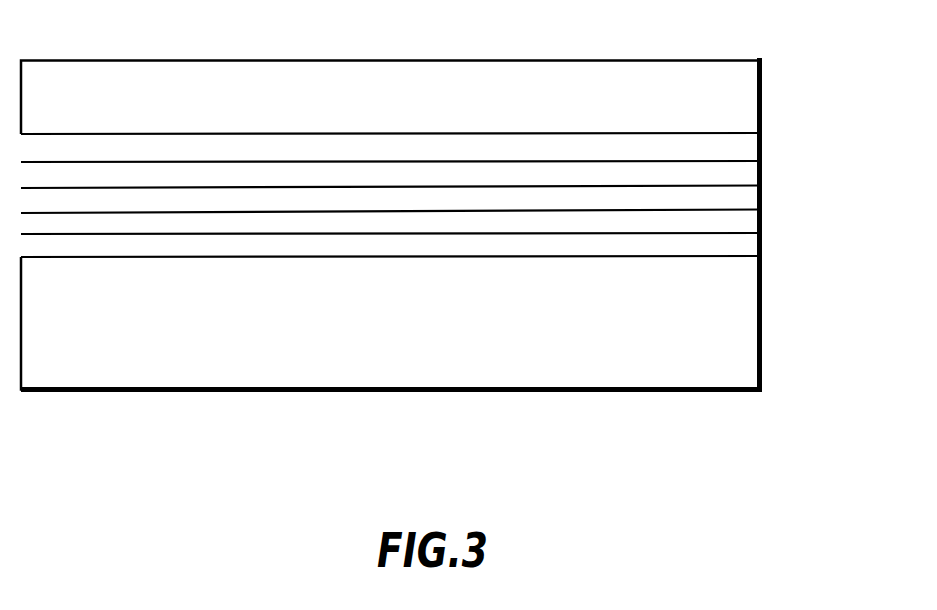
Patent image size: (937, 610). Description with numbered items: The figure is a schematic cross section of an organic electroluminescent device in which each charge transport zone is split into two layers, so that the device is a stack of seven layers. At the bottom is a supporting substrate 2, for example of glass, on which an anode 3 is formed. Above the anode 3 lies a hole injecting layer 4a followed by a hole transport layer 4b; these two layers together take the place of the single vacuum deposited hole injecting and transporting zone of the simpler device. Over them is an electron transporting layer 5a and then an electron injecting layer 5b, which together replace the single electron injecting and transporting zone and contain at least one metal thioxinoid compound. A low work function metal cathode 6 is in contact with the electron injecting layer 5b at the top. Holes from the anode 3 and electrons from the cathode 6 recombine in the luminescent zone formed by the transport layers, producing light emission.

The supporting substrate 2 is at (735, 357).
The anode 3 is at (740, 248).
The hole injecting layer 4a is at (730, 225).
The hole transport layer 4b is at (723, 202).
The electron transporting layer 5a is at (729, 173).
The electron injecting layer 5b is at (720, 145).
The cathode 6 is at (743, 83).